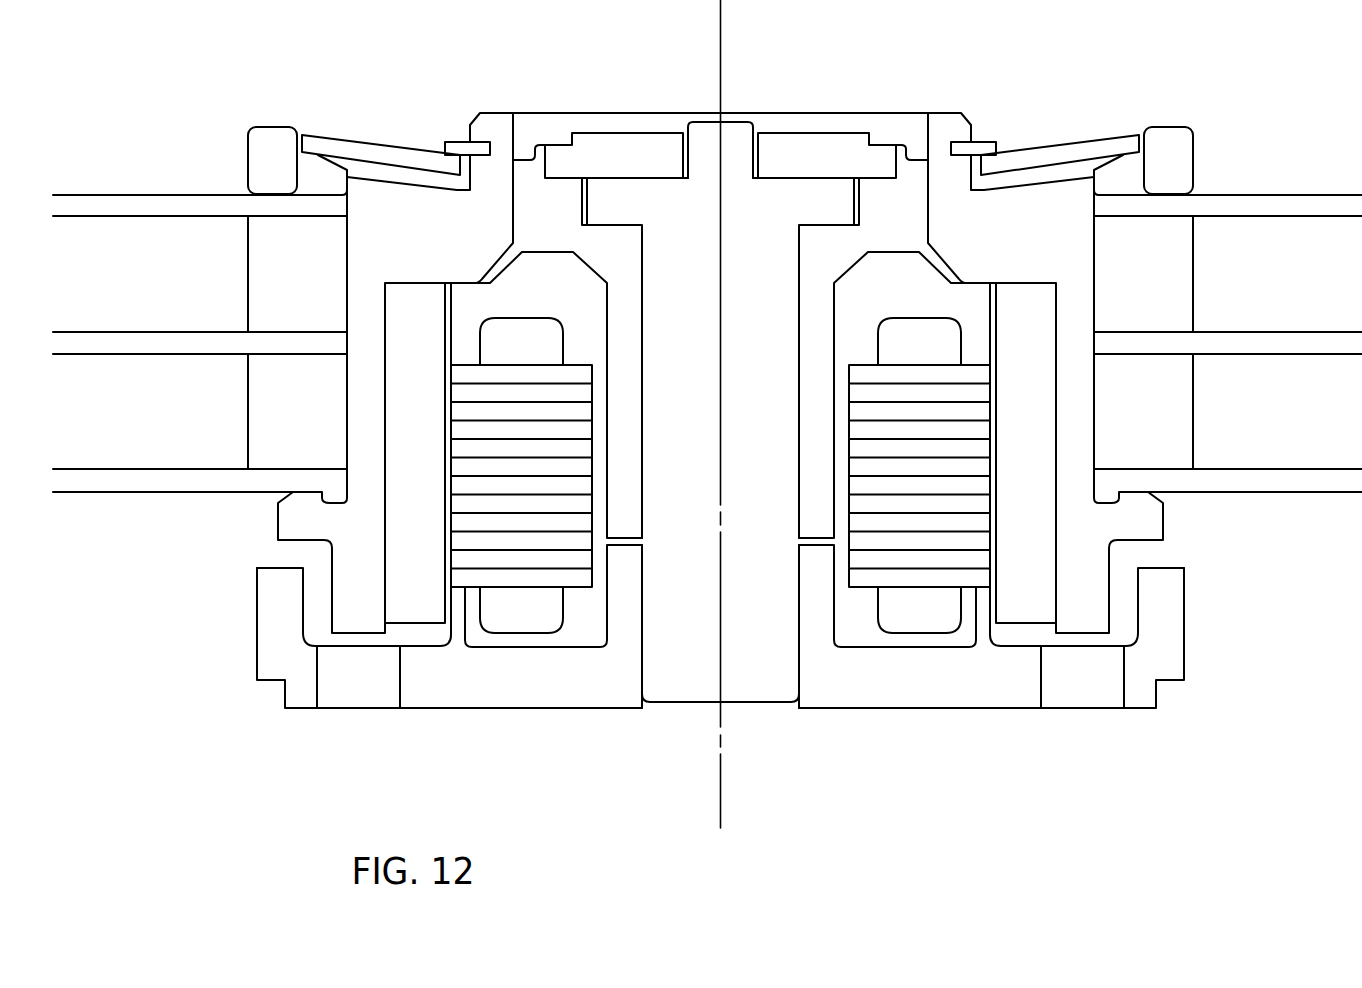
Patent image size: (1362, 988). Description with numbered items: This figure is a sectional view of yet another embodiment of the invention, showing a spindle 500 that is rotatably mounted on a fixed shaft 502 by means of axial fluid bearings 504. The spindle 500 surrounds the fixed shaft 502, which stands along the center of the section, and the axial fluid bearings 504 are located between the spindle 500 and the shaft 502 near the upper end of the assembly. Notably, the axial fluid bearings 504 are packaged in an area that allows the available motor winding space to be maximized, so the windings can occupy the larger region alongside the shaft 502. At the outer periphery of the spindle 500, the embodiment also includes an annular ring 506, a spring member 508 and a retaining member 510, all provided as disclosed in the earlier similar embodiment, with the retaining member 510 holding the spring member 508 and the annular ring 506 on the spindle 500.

The spindle 500 is at (495, 121).
The fixed shaft 502 is at (700, 425).
The axial fluid bearings 504 is at (616, 234).
The annular ring 506 is at (265, 137).
The spring member 508 is at (348, 146).
The retaining member 510 is at (460, 143).